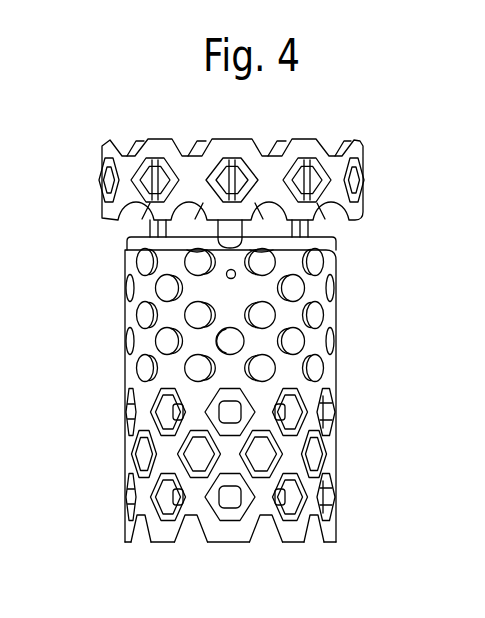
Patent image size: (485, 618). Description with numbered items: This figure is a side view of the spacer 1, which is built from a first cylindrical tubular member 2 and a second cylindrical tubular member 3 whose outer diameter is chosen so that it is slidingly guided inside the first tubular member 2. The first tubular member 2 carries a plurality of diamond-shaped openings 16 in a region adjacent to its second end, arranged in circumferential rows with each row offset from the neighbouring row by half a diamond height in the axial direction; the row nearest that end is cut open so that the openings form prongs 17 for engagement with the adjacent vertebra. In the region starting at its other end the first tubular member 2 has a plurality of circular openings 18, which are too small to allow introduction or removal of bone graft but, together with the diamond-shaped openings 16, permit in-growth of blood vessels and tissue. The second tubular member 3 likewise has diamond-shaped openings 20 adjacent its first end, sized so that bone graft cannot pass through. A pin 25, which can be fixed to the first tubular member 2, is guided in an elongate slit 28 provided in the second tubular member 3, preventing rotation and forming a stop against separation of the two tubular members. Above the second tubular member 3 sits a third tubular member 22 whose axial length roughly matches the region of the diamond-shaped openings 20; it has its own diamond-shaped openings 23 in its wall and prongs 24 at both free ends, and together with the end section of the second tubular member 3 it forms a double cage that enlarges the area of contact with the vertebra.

The spacer 1 is at (375, 122).
The first cylindrical tubular member 2 is at (350, 428).
The second cylindrical tubular member 3 is at (325, 226).
The diamond-shaped openings 16 is at (128, 458).
The prongs 17 is at (135, 538).
The circular openings 18 is at (190, 314).
The diamond-shaped openings 20 is at (135, 250).
The third tubular member 22 is at (372, 176).
The diamond-shaped openings 23 is at (102, 188).
The prongs 24 is at (150, 138).
The pin 25 is at (234, 279).
The elongate slit 28 is at (198, 366).